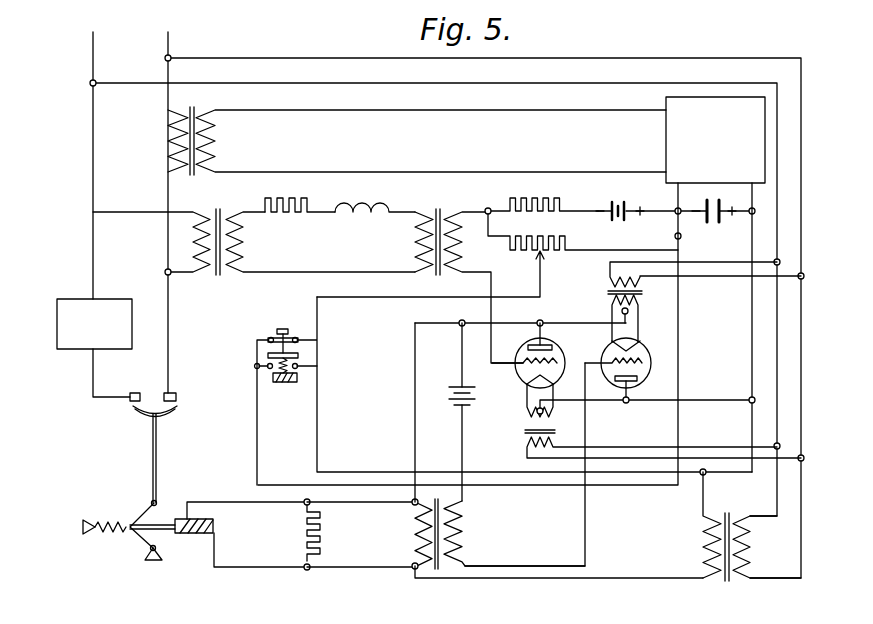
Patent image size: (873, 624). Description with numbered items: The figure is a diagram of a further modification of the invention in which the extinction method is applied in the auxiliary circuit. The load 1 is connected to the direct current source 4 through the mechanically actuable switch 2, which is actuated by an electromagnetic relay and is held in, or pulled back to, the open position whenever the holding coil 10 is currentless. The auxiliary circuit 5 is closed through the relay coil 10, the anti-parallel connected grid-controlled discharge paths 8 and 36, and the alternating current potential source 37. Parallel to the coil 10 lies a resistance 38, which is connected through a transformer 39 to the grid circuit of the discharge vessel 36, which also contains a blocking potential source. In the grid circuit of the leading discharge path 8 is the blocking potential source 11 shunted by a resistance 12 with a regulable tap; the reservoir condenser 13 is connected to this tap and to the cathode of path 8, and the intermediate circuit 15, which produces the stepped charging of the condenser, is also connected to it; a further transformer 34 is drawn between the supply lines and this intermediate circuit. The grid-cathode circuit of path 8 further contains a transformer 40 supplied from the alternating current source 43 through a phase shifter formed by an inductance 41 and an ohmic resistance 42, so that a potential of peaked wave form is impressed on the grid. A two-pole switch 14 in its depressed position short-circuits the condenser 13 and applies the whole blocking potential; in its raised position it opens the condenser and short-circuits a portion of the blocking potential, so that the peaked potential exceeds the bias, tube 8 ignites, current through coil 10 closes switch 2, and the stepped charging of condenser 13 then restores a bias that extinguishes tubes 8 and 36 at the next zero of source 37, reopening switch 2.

The load 1 is at (86, 349).
The mechanically actuable switch 2 is at (154, 404).
The direct current source 4 is at (93, 44).
The auxiliary circuit 5 is at (591, 352).
The gas-filled controllable discharge path 8 is at (520, 374).
The relay coil 10 is at (210, 535).
The blocking potential source 11 is at (615, 204).
The resistance with regulable tap 12 is at (545, 250).
The reservoir condenser 13 is at (709, 221).
The two-pole switch 14 is at (285, 338).
The intermediate circuit 15 is at (666, 138).
The transformer 34 is at (191, 114).
The grid controlled discharge path 36 is at (636, 372).
The alternating current potential source 37 is at (729, 515).
The resistance 38 is at (305, 537).
The transformer 39 is at (462, 545).
The transformer 40 is at (438, 212).
The inductance 41 is at (362, 208).
The ohmic resistance 42 is at (282, 204).
The alternating current potential source 43 is at (220, 213).